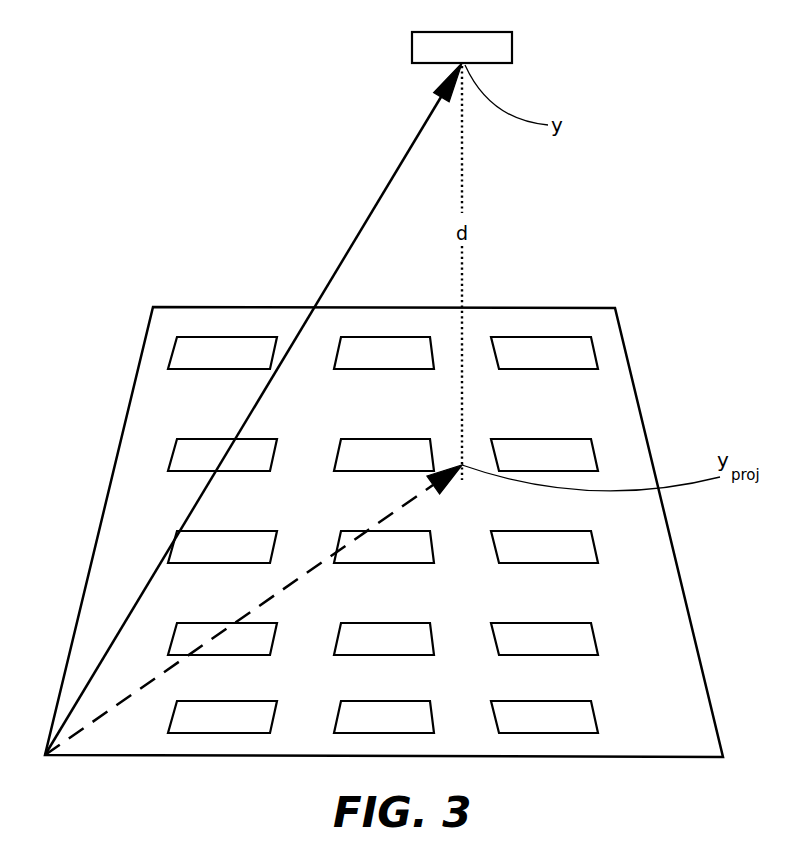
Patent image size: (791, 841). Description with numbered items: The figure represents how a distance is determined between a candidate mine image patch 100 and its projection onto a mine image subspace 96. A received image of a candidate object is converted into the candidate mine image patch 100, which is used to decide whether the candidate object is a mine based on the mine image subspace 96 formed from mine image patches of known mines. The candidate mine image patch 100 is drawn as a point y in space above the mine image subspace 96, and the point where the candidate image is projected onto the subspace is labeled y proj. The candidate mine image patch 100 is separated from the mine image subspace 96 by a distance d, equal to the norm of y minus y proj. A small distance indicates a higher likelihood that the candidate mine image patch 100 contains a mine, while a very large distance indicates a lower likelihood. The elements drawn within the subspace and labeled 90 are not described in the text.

The candidate mine image patch 100 is at (420, 45).
The mine image subspace 96 is at (593, 305).
The objects / tiles on surface 90 is at (206, 366).